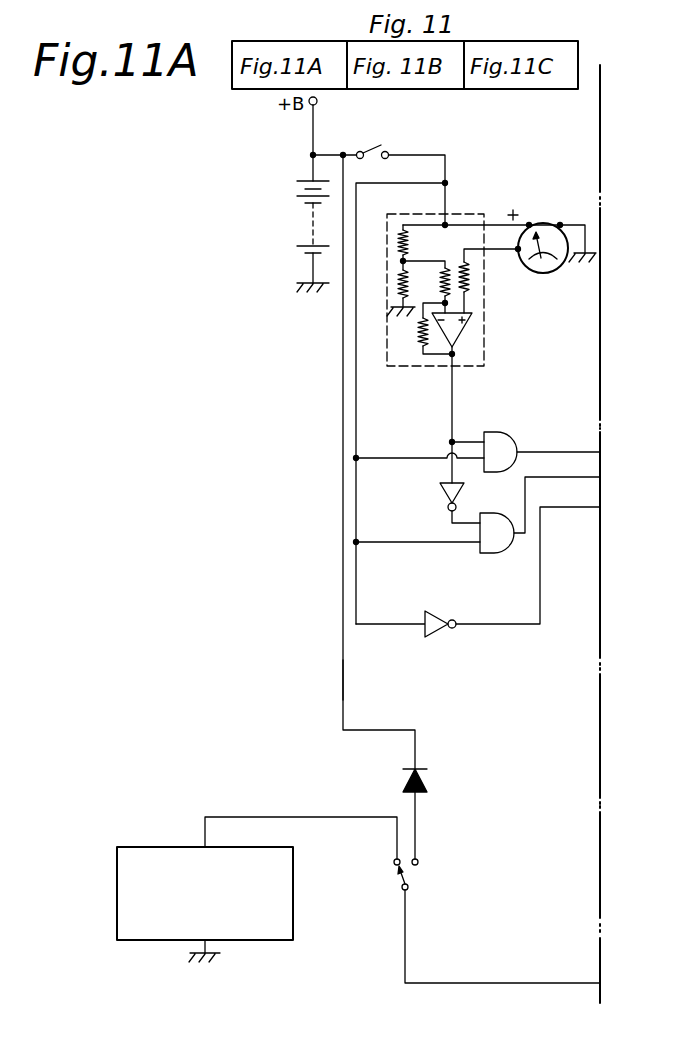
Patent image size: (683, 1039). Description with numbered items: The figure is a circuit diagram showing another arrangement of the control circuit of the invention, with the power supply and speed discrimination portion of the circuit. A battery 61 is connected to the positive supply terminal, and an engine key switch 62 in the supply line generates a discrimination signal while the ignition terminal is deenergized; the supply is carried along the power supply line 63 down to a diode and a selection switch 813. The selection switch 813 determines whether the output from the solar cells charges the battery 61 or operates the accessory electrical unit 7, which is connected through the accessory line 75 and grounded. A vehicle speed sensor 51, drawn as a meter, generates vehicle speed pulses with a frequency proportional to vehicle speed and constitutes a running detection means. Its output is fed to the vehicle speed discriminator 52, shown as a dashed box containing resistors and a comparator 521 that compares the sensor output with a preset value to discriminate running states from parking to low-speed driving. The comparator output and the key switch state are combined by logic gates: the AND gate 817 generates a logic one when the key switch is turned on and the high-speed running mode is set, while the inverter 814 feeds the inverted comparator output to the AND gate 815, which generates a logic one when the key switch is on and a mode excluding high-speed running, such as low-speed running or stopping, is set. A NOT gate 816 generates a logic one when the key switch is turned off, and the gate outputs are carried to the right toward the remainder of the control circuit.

The accessory electrical unit 7 is at (147, 847).
The vehicle speed sensor 51 is at (543, 221).
The vehicle speed discriminator 52 is at (464, 290).
The comparator 521 is at (462, 328).
The battery 61 is at (300, 203).
The engine key switch 62 is at (371, 151).
The power supply line 63 is at (342, 684).
The accessory power line 75 is at (305, 817).
The selection switch 813 is at (418, 868).
The inverter 814 is at (441, 493).
The AND gate 815 is at (495, 554).
The NOT gate 816 is at (437, 634).
The AND gate 817 is at (497, 432).